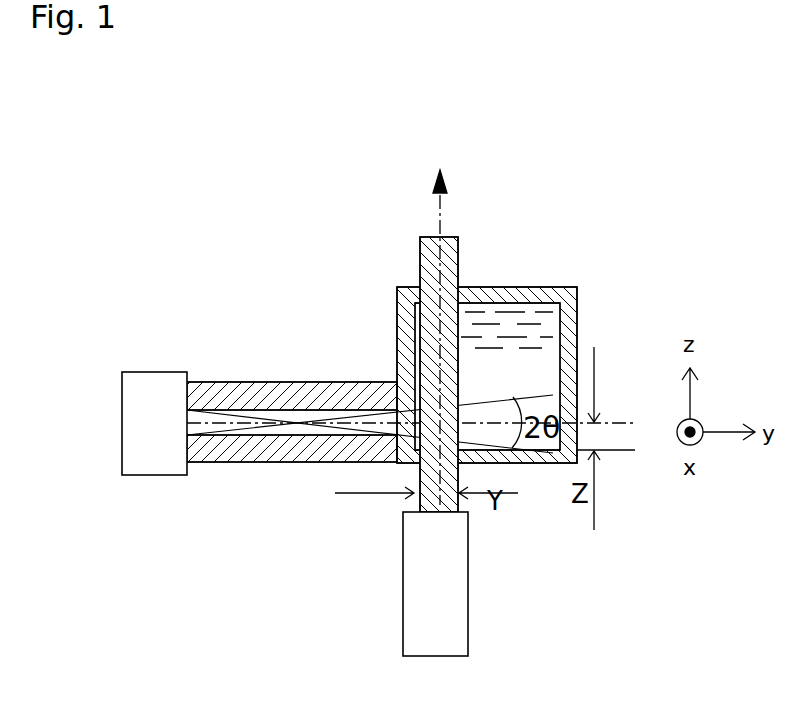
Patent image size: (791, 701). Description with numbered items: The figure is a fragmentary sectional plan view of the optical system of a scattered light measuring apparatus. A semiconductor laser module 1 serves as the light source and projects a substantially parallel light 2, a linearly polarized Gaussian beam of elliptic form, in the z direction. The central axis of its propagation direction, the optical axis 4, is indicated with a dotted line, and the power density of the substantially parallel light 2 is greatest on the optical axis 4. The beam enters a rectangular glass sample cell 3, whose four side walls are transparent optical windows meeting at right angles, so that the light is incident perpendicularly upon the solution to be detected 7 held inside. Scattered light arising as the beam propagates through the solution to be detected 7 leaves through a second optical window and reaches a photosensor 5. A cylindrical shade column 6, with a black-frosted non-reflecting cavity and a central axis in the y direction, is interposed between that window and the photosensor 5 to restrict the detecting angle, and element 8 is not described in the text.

The semiconductor laser module 1 is at (450, 622).
The substantially parallel light 2 is at (423, 268).
The sample cell 3 is at (478, 296).
The optical axis 4 is at (442, 234).
The photosensor 5 is at (142, 468).
The shade column 6 is at (198, 385).
The solution to be detected 7 is at (550, 326).
The light beam 8 is at (230, 432).